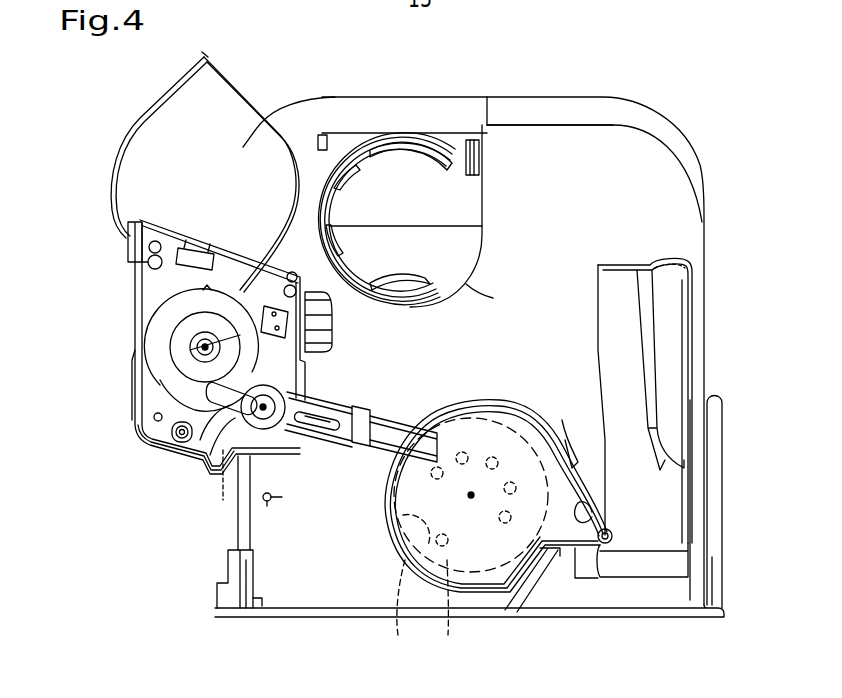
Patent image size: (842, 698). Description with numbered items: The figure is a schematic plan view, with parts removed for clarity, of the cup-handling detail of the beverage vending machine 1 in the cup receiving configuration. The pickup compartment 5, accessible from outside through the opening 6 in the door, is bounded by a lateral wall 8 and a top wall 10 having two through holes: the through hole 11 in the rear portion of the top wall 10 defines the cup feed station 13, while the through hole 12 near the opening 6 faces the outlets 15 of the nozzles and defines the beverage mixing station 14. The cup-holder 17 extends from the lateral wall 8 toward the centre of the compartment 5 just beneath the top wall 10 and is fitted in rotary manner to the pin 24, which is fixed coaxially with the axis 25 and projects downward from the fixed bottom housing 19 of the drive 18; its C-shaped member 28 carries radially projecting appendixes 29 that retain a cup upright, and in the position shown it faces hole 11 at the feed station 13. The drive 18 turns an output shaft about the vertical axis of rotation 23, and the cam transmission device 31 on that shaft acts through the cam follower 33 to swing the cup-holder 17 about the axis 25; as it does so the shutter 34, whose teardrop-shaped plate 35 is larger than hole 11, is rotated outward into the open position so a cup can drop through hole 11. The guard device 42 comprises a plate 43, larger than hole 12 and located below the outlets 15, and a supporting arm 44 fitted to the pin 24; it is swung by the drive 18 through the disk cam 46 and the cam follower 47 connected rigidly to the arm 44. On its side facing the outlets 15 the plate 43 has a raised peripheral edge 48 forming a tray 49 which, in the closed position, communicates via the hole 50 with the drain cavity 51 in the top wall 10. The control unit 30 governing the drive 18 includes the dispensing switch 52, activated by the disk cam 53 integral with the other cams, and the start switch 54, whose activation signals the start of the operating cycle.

The beverage vending machine 1 is at (92, 203).
The pickup compartment 5 is at (335, 548).
The opening 6 is at (257, 604).
The lateral wall 8 is at (697, 382).
The top wall 10 is at (610, 176).
The through hole 11 is at (474, 253).
The through hole 12 is at (406, 590).
The cup feed station 13 is at (470, 208).
The beverage mixing station 14 is at (549, 560).
The outlets 15 is at (445, 588).
The cup-holder 17 is at (369, 140).
The drive 18 is at (128, 343).
The bottom housing 19 is at (158, 305).
The axis of rotation 23 is at (190, 350).
The pin 24 is at (229, 492).
The axis 25 is at (226, 474).
The C-shaped member 28 is at (387, 148).
The appendixes 29 is at (415, 148).
The control unit 30 is at (232, 270).
The cam transmission device 31 is at (145, 293).
The cam follower 33 is at (197, 453).
The shutter 34 is at (246, 102).
The teardrop-shaped plate 35 is at (240, 143).
The guard device 42 is at (543, 398).
The plate 43 is at (537, 400).
The supporting arm 44 is at (398, 437).
The disk cam 46 is at (177, 387).
The cam follower 47 is at (172, 428).
The raised peripheral edge 48 is at (575, 549).
The tray 49 is at (594, 521).
The hole 50 is at (612, 538).
The drain cavity 51 is at (665, 357).
The dispensing switch 52 is at (181, 265).
The disk cam 53 is at (155, 280).
The start switch 54 is at (303, 358).